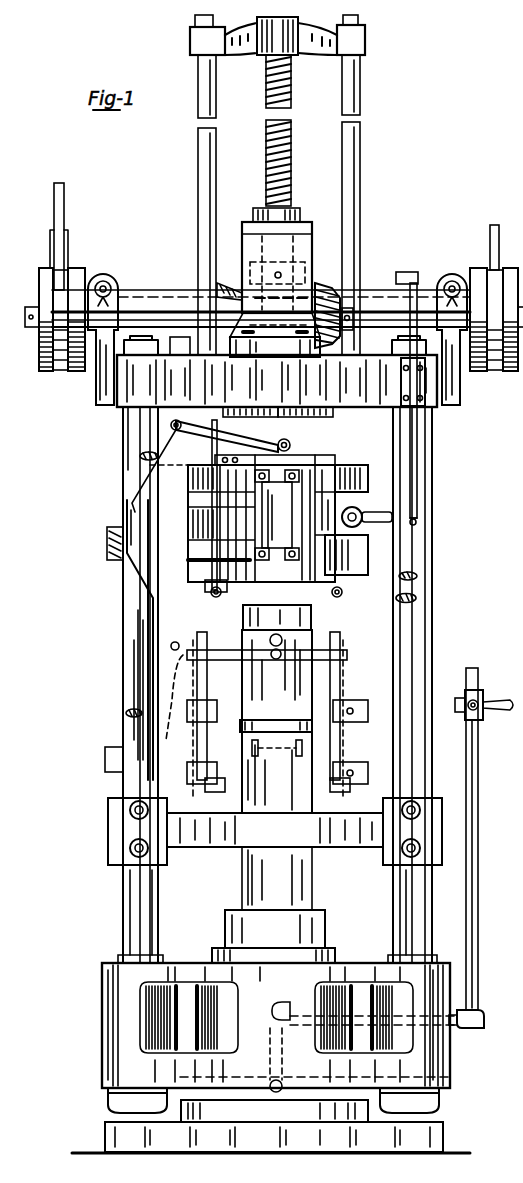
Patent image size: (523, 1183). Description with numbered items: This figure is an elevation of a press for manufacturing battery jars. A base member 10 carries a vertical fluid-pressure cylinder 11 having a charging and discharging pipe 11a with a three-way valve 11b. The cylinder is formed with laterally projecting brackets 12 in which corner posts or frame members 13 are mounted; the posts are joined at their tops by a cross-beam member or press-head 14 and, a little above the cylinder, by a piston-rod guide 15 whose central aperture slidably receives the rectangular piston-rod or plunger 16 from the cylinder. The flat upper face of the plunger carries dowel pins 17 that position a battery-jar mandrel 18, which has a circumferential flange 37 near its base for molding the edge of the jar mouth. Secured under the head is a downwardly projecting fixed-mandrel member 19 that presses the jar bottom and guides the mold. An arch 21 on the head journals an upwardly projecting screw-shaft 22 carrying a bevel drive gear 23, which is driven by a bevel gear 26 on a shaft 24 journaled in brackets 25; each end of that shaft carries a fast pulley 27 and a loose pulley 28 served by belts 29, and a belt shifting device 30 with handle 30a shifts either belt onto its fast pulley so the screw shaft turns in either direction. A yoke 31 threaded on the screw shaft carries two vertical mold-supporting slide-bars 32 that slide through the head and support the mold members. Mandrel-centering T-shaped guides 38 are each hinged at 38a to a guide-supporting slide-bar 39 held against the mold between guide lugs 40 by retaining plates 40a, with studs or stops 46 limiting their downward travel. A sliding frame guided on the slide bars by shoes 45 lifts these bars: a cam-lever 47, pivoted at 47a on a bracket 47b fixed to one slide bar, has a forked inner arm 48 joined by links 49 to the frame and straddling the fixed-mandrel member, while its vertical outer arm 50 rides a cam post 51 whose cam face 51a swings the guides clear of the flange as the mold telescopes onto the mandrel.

The base member 10 is at (410, 1135).
The fluid-pressure cylinder 11 is at (278, 1001).
The charging and discharging pipe 11a is at (480, 935).
The three-way valve 11b is at (478, 695).
The laterally projecting brackets 12 is at (105, 1018).
The corner posts or frame members 13 is at (127, 440).
The cross-beam member or press-head 14 is at (277, 371).
The piston-rod guide 15 is at (365, 840).
The piston-rod or plunger 16 is at (242, 878).
The dowel pins 17 is at (310, 745).
The battery-jar mandrel 18 is at (300, 643).
The fixed-mandrel member 19 is at (290, 447).
The arch 21 is at (302, 242).
The screw-shaft 22 is at (284, 160).
The bevel drive gear 23 is at (322, 290).
The shaft 24 is at (418, 296).
The brackets 25 is at (105, 368).
The bevel gear 26 is at (322, 340).
The fast pulley 27 is at (78, 270).
The loose pulley 28 is at (44, 268).
The belts 29 is at (64, 207).
The belt shifting device 30 is at (368, 292).
The handle 30a is at (392, 517).
The yoke 31 is at (316, 45).
The mold-supporting slide-bars 32 is at (200, 188).
The circumferential flange 37 is at (242, 725).
The T-shaped guides 38 is at (240, 598).
The horizontal hinge axis 38a is at (212, 592).
The guide-supporting slide-bar 39 is at (356, 505).
The guide lugs 40 is at (205, 548).
The retaining plates 40a is at (352, 492).
The shoes 45 is at (208, 440).
The studs or stops 46 is at (256, 480).
The cam-lever 47 is at (150, 466).
The pivot 47a is at (141, 456).
The bracket 47b is at (170, 425).
The forked inner arm 48 is at (255, 435).
The link 49 is at (312, 432).
The outer arm 50 is at (132, 503).
The cam post 51 is at (130, 613).
The cam face 51a is at (123, 560).